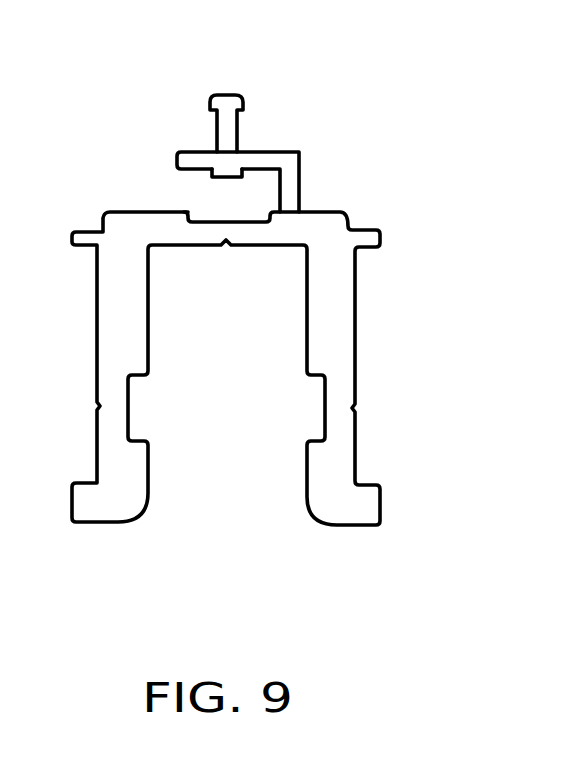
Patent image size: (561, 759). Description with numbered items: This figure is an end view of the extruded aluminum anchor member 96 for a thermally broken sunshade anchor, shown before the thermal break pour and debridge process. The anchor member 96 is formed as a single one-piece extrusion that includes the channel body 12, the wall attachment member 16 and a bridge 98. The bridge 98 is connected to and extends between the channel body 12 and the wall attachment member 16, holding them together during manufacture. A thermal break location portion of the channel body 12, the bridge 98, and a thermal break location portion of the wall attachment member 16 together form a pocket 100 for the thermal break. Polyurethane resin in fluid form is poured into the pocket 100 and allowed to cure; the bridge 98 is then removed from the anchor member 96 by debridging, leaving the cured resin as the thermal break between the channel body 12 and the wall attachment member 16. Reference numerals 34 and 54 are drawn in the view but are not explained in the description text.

The channel body 12 is at (360, 308).
The wall attachment member 16 is at (217, 95).
The mounting block 34 is at (205, 226).
The boss 54 is at (220, 172).
The anchor member 96 is at (344, 108).
The bridge 98 is at (303, 185).
The pocket 100 is at (172, 196).